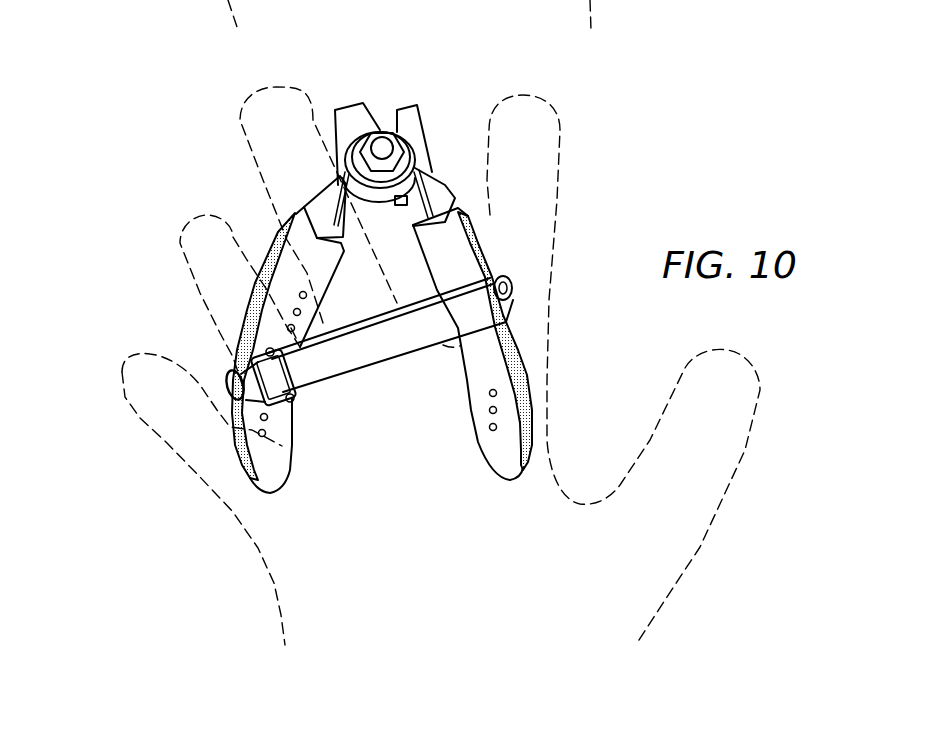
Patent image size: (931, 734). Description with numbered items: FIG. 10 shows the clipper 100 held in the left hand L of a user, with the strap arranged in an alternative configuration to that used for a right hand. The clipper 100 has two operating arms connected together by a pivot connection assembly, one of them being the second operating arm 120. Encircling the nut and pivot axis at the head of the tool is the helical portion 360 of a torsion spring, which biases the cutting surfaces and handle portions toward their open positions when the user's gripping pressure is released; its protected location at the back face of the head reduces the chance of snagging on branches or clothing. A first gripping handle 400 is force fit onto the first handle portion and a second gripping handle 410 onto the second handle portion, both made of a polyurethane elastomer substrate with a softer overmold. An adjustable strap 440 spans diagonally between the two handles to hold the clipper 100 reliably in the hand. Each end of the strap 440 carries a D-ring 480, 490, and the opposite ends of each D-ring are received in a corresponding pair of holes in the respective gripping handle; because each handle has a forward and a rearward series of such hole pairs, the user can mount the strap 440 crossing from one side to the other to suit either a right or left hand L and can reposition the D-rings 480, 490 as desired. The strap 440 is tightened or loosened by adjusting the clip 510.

The clipper 100 is at (605, 156).
The second operating arm 120 is at (436, 183).
The helical portion 360 is at (403, 146).
The first gripping handle 400 is at (280, 250).
The second gripping handle 410 is at (478, 432).
The adjustable strap 440 is at (406, 350).
The D-ring 480 is at (228, 373).
The D-ring 490 is at (508, 278).
The clip 510 is at (292, 402).
The left hand L is at (278, 583).